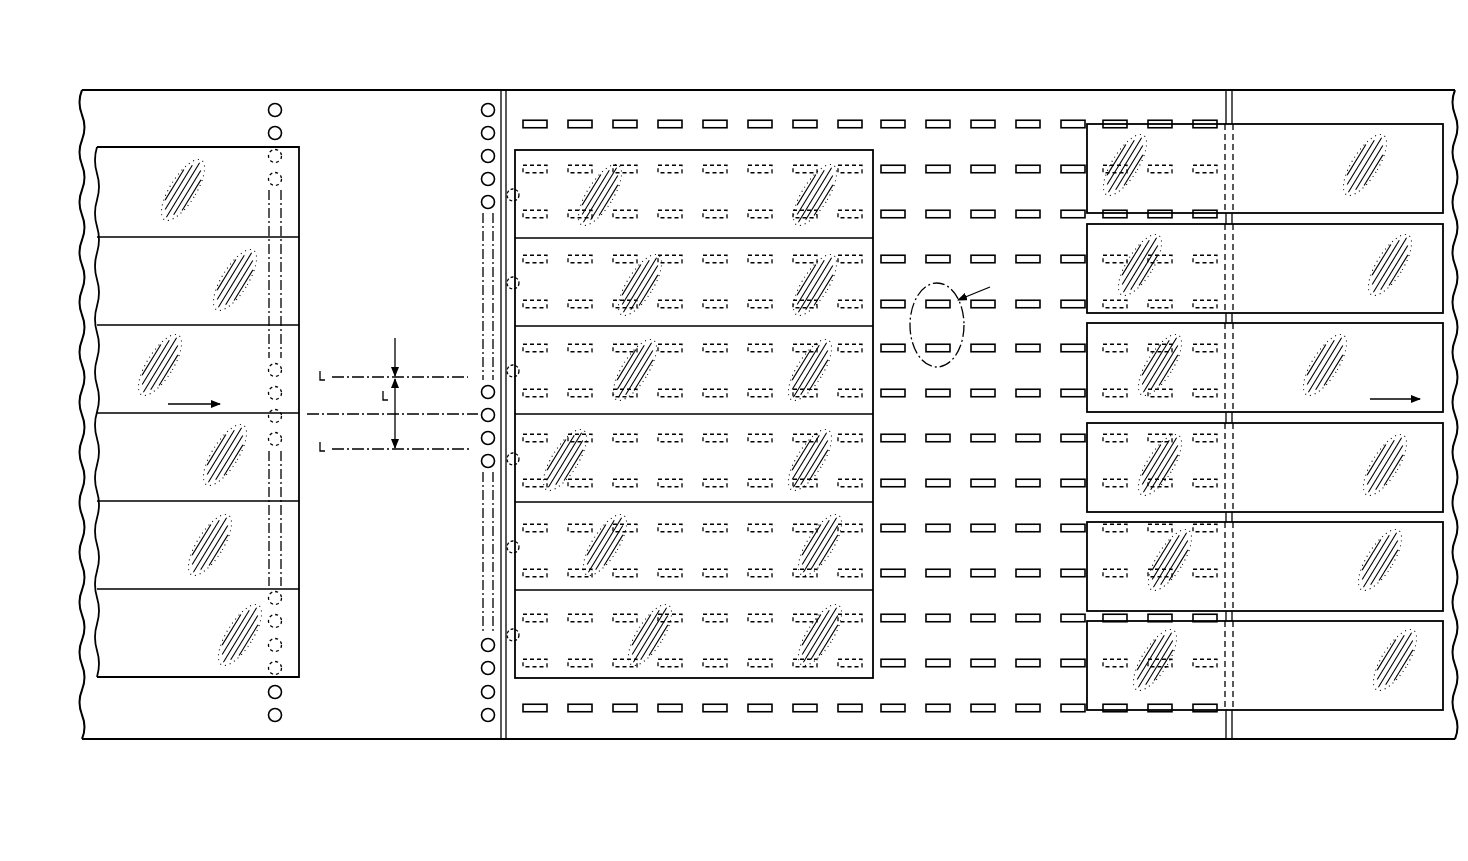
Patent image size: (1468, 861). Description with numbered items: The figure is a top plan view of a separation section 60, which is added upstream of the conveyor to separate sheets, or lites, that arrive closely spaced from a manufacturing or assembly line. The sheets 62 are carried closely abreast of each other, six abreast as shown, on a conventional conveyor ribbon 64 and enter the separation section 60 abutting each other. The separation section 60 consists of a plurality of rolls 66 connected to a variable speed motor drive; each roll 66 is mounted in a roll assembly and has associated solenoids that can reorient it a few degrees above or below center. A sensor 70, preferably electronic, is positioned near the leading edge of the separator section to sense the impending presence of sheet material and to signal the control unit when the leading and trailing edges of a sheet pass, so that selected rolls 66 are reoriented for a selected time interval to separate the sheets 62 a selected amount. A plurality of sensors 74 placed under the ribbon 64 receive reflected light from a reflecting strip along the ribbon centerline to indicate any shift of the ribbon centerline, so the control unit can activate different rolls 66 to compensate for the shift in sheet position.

The separation section 60 is at (931, 86).
The sheets 62 is at (206, 375).
The conveyor ribbon 64 is at (397, 720).
The rolls 66 is at (990, 210).
The sensor 70 is at (508, 280).
The sensors 74 is at (281, 106).